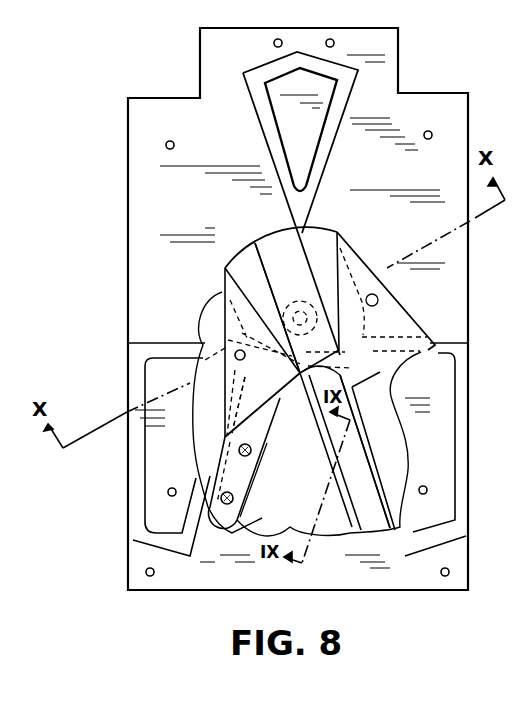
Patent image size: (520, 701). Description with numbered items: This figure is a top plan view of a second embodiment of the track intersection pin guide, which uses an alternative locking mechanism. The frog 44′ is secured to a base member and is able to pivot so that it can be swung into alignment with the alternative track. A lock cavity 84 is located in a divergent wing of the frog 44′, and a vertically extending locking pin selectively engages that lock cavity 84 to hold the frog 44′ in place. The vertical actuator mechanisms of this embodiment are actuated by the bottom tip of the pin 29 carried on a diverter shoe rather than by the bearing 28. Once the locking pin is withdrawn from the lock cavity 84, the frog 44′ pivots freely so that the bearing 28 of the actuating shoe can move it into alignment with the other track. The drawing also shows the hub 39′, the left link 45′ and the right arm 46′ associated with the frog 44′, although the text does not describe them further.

The pivot hub 39′ is at (300, 284).
The frog 44′ is at (408, 315).
The right lever arm 46′ is at (392, 378).
The lock cavity 84 is at (237, 360).
The left lever link 45′ is at (233, 392).
The pin 29 is at (237, 470).
The bearing 28 is at (232, 492).